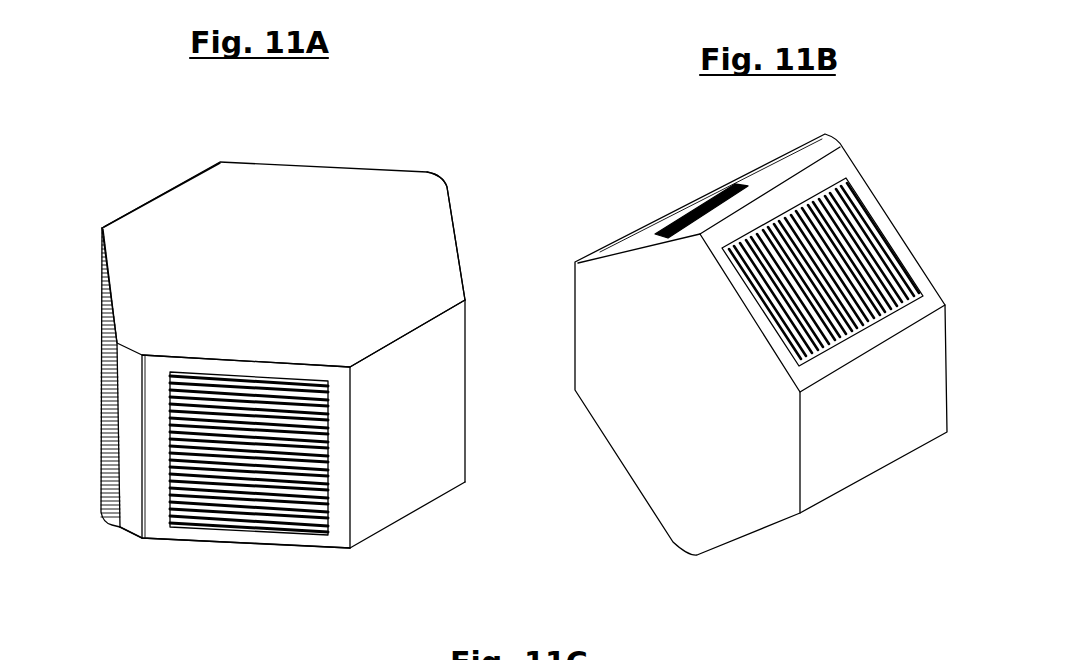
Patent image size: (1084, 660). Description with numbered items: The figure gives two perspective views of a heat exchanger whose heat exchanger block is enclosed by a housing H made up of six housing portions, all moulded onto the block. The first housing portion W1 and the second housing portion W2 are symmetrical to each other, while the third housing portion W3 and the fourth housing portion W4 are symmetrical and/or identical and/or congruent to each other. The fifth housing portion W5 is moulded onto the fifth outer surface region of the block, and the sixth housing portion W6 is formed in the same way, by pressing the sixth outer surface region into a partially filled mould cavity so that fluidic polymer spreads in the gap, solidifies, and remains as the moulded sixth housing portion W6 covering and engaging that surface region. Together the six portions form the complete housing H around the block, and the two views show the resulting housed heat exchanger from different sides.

In FIG. 11A, the housing H is at (294, 360).
In FIG. 11B, the housing H is at (672, 406).
In FIG. 11A, the first housing portion W1 is at (390, 500).
In FIG. 11A, the second housing portion W2 is at (158, 200).
In FIG. 11A, the third housing portion W3 is at (445, 185).
In FIG. 11A, the fourth housing portion W4 is at (132, 497).
In FIG. 11A, the fifth housing portion W5 is at (243, 542).
In FIG. 11A, the sixth housing portion W6 is at (265, 185).